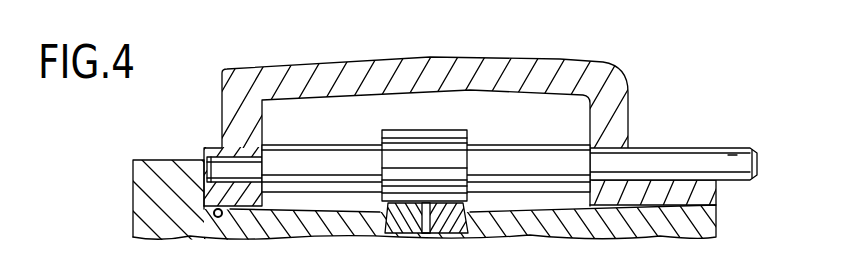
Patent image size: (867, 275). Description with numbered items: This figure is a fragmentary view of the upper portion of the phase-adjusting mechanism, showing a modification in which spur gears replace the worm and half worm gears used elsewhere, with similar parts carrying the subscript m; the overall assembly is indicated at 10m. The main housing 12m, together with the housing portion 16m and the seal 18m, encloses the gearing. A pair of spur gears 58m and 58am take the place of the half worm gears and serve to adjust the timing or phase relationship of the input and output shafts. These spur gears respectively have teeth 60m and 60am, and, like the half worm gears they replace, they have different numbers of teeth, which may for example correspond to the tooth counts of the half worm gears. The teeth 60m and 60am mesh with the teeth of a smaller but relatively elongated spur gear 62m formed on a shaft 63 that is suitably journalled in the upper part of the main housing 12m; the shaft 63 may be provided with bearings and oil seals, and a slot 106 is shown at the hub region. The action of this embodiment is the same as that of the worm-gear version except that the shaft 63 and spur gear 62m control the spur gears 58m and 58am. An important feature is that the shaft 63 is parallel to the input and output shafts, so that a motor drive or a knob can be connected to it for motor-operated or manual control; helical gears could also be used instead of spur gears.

The seat adjuster assembly 10m is at (540, 53).
The main housing 12m is at (628, 88).
The housing block 16m is at (162, 172).
The seal ring 18m is at (222, 218).
The spur gear 58m is at (467, 214).
The spur gear 58am is at (385, 206).
The teeth 60m is at (468, 175).
The teeth 60am is at (393, 190).
The spur gear 62m is at (450, 198).
The shaft 63 is at (678, 157).
The slot 106 is at (486, 248).